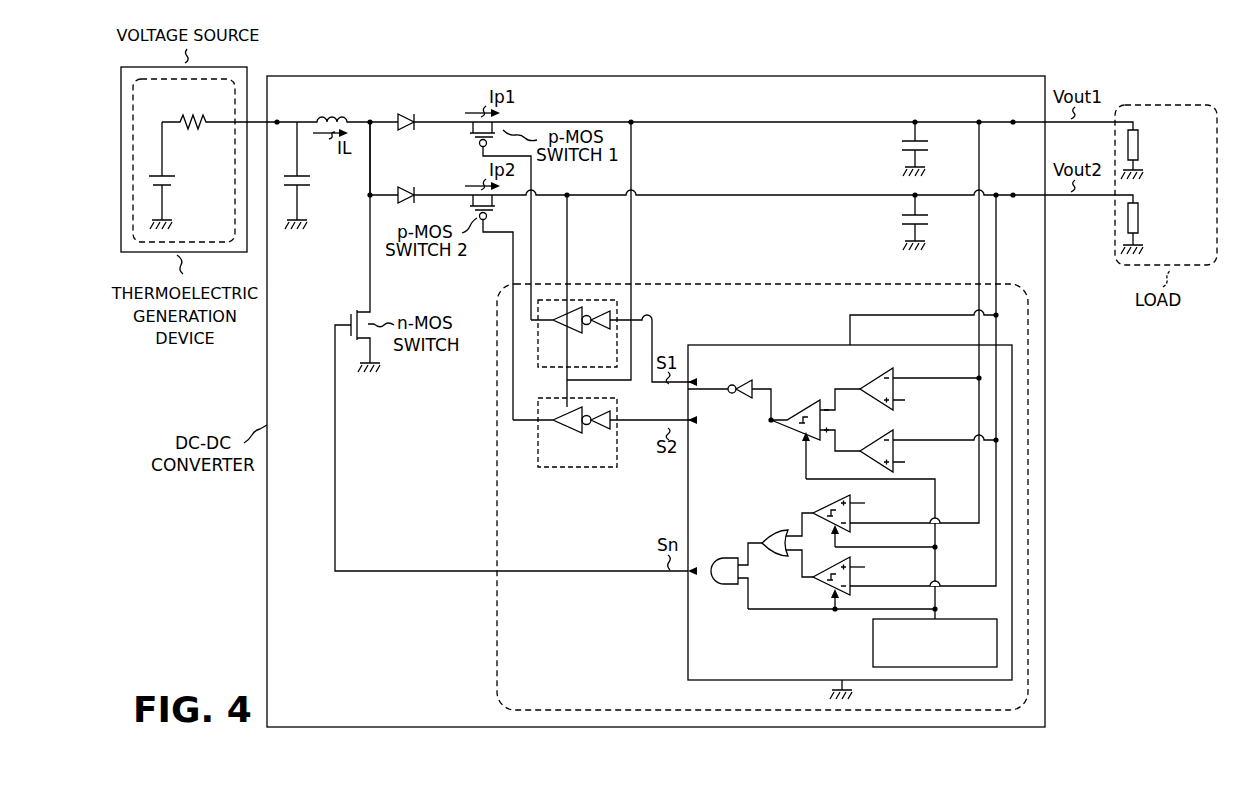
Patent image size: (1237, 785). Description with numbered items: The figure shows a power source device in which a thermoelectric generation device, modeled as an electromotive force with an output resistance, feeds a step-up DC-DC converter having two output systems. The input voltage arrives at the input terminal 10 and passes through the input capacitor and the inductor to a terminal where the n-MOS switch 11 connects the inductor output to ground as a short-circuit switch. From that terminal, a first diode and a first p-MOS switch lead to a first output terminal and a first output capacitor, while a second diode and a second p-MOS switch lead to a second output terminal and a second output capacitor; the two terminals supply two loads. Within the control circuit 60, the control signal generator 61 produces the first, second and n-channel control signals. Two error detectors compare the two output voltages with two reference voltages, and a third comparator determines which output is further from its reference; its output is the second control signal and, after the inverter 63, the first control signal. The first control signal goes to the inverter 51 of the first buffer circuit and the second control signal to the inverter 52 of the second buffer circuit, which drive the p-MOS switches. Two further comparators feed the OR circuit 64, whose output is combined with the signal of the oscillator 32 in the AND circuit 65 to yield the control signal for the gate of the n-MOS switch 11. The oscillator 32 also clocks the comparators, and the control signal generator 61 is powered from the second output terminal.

The input terminal 10 is at (278, 121).
The n-MOS switch 11 is at (348, 321).
The oscillator 32 is at (875, 647).
The inverter 51 is at (602, 333).
The inverter 52 is at (602, 433).
The control circuit 60 is at (497, 633).
The control signal generator 61 is at (688, 614).
The inverter 63 is at (743, 384).
The OR circuit 64 is at (773, 529).
The AND circuit 65 is at (725, 556).